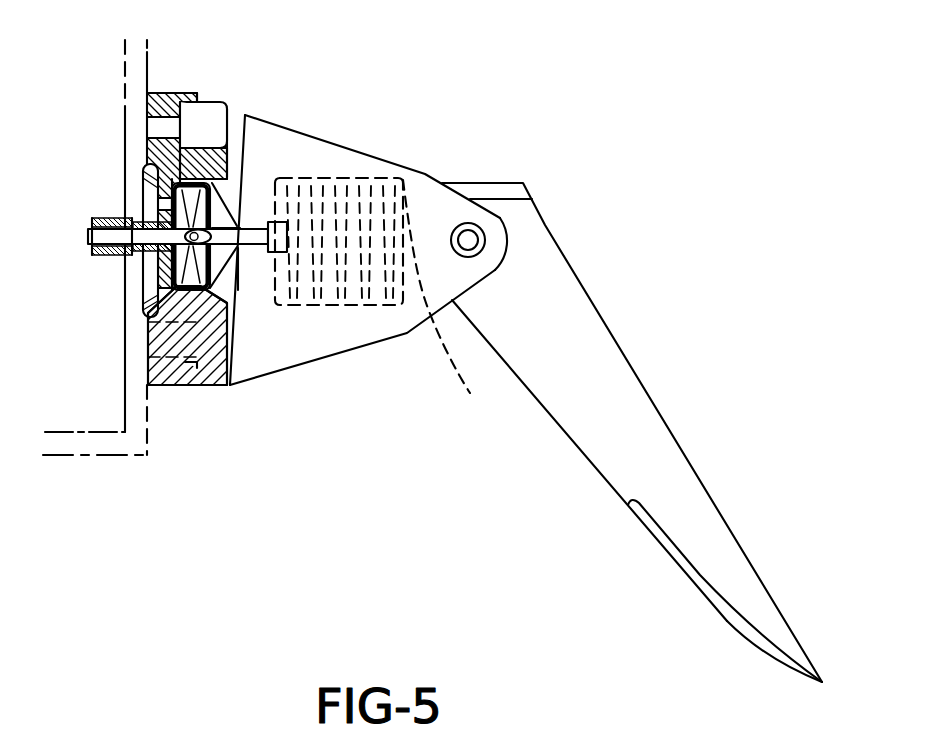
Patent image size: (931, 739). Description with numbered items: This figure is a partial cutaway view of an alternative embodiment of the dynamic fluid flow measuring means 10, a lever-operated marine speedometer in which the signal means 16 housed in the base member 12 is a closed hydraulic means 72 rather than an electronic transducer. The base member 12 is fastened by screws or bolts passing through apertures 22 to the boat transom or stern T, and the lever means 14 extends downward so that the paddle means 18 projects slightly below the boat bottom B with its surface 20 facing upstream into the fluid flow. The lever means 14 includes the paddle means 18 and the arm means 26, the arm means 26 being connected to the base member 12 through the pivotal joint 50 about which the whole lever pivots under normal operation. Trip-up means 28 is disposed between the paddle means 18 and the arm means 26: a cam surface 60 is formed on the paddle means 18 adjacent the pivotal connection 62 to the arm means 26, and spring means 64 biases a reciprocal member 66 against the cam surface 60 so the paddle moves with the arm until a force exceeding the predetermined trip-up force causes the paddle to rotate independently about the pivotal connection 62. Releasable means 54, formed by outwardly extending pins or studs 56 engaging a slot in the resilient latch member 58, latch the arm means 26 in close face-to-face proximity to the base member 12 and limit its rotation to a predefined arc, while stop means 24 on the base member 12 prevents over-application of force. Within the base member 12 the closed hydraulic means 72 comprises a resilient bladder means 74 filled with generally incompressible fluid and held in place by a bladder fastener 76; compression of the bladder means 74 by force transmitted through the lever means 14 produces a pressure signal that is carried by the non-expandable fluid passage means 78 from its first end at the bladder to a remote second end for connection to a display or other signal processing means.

The dynamic fluid flow measuring means 10 is at (537, 63).
The base member 12 is at (193, 178).
The lever means 14 is at (406, 366).
The signal means 16 is at (231, 135).
The paddle means 18 is at (660, 403).
The surface 20 is at (723, 620).
The apertures 22 is at (195, 367).
The stop means 24 is at (242, 114).
The arm means 26 is at (366, 153).
The trip-up means 28 is at (334, 310).
The pivotal joint 50 is at (231, 384).
The releasable means 54 is at (248, 252).
The pins or studs 56 is at (176, 228).
The latch member 58 is at (160, 257).
The cam surface 60 is at (424, 186).
The pivotal connection 62 is at (488, 232).
The spring means 64 is at (325, 142).
The reciprocal member 66 is at (456, 304).
The closed hydraulic means 72 is at (150, 314).
The bladder means 74 is at (186, 183).
The bladder fastener 76 is at (133, 217).
The fluid passage means 78 is at (90, 240).
The transom T is at (124, 66).
The boat bottom B is at (96, 428).